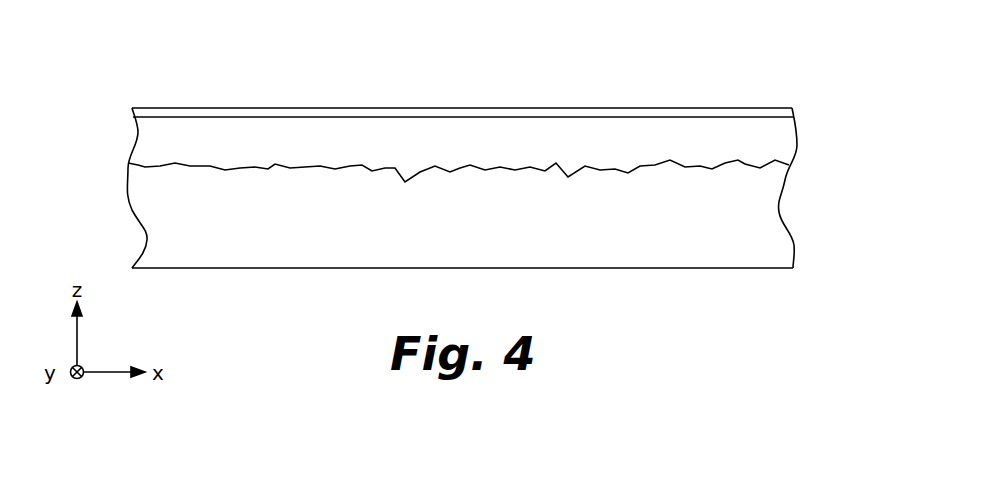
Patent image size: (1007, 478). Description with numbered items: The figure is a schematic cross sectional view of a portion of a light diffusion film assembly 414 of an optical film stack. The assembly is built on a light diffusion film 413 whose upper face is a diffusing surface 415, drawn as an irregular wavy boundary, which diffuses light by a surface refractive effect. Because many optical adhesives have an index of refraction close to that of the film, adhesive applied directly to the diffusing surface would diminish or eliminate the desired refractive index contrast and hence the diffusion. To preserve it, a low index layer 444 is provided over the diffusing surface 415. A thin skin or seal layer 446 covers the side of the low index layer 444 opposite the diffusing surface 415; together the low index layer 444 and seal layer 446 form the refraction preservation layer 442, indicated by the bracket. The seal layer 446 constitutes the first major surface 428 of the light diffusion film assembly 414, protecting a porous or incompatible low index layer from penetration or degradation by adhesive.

The light diffusion film assembly 414 is at (768, 70).
The light diffusion film 413 is at (214, 255).
The refraction preservation layer 442 is at (117, 108).
The seal layer 446 is at (165, 113).
The low index layer 444 is at (263, 128).
The first major surface 428 is at (570, 109).
The diffusing surface 415 is at (740, 163).